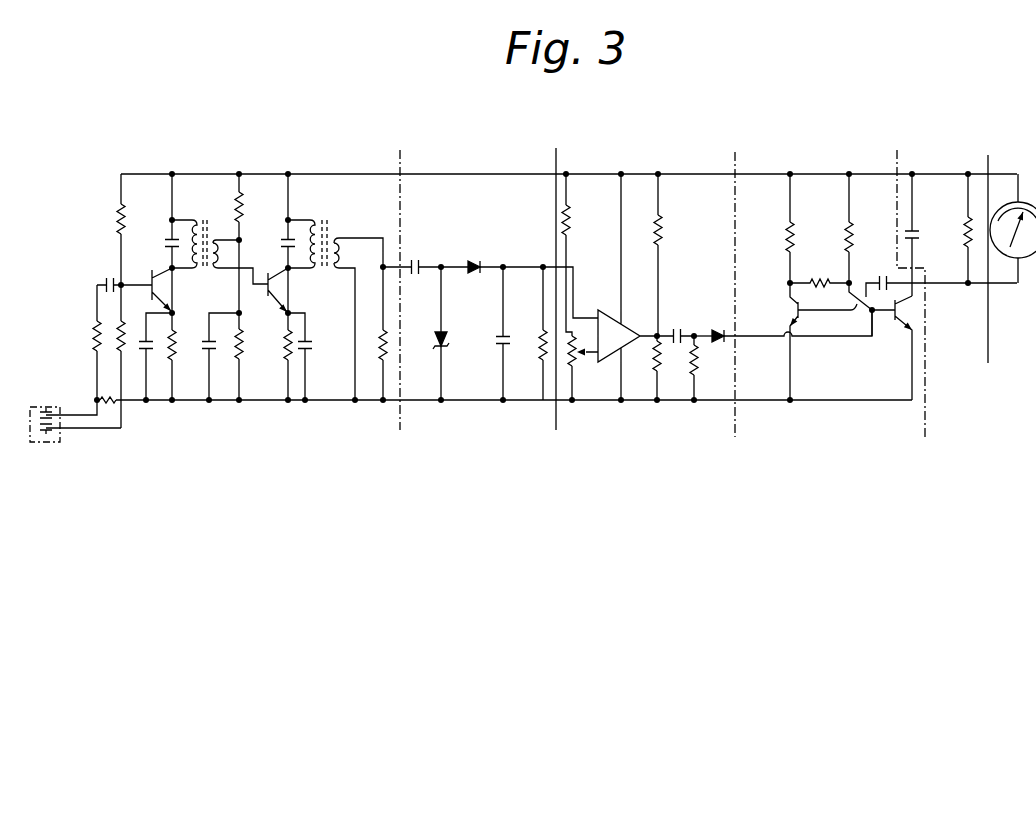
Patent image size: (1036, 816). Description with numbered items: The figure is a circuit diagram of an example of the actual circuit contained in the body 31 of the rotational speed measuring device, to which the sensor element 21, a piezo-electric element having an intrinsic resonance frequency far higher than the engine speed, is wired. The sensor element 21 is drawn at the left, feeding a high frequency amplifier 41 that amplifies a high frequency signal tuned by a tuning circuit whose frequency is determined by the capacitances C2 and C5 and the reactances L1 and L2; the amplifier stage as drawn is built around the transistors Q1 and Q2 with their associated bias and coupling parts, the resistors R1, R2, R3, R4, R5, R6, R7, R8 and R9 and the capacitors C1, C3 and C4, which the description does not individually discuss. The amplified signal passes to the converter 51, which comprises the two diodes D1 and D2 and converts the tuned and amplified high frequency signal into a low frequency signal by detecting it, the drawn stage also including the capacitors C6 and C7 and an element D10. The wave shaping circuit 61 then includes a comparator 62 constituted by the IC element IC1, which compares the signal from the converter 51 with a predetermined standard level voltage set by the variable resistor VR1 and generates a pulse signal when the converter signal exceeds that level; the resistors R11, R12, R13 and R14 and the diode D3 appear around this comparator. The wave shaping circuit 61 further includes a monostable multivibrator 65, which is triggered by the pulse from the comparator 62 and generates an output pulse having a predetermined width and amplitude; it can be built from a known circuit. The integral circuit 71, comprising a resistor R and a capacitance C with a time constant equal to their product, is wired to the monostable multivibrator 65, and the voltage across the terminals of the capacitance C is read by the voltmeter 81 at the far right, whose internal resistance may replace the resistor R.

The sensor element 21 is at (55, 444).
The body of the rotational speed measuring device 31 is at (697, 153).
The high frequency amplifier 41 is at (222, 325).
The converter 51 is at (538, 348).
The wave shaping circuit 61 is at (817, 484).
The comparator 62 is at (717, 325).
The monostable multivibrator 65 is at (901, 325).
The integral circuit 71 is at (938, 325).
The voltmeter 81 is at (1013, 325).
The resistor R1 is at (108, 403).
The resistor R2 is at (95, 342).
The resistor R3 is at (120, 223).
The resistor R4 is at (120, 323).
The resistor R5 is at (176, 350).
The resistor R6 is at (245, 210).
The resistor R7 is at (243, 345).
The resistor R8 is at (285, 350).
The resistor R9 is at (380, 356).
The resistor R11 is at (570, 218).
The resistor R12 is at (665, 236).
The resistor R13 is at (656, 357).
The resistor R14 is at (692, 350).
The resistor R is at (964, 224).
The capacitor C1 is at (143, 350).
The capacitance C2 is at (167, 249).
The capacitor C3 is at (206, 344).
The capacitor C4 is at (311, 346).
The capacitance C5 is at (287, 247).
The capacitor C6 is at (418, 261).
The capacitor C7 is at (500, 344).
The capacitance C is at (919, 235).
The reactance L1 is at (197, 226).
The reactance L2 is at (327, 225).
The transistor Q1 is at (160, 284).
The transistor Q2 is at (280, 285).
The diode D1 is at (436, 346).
The diode D2 is at (478, 262).
The diode D3 is at (718, 326).
The diode D10 is at (540, 345).
The IC element IC1 is at (627, 287).
The variable resistor VR1 is at (590, 368).